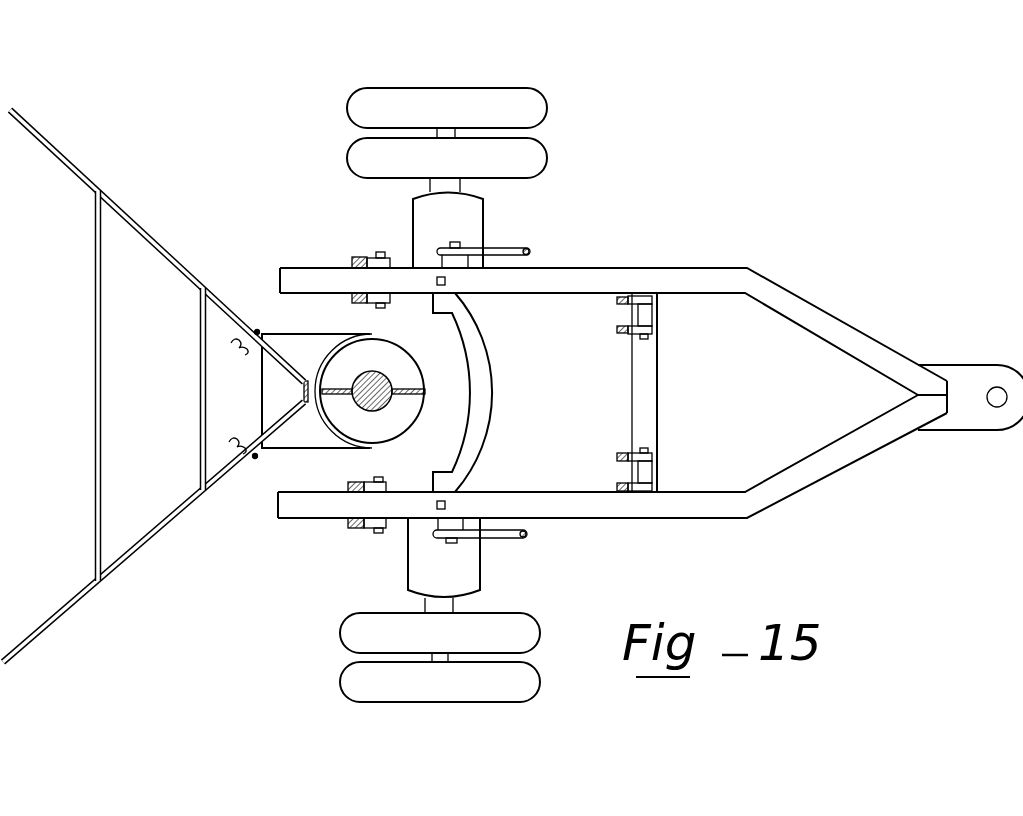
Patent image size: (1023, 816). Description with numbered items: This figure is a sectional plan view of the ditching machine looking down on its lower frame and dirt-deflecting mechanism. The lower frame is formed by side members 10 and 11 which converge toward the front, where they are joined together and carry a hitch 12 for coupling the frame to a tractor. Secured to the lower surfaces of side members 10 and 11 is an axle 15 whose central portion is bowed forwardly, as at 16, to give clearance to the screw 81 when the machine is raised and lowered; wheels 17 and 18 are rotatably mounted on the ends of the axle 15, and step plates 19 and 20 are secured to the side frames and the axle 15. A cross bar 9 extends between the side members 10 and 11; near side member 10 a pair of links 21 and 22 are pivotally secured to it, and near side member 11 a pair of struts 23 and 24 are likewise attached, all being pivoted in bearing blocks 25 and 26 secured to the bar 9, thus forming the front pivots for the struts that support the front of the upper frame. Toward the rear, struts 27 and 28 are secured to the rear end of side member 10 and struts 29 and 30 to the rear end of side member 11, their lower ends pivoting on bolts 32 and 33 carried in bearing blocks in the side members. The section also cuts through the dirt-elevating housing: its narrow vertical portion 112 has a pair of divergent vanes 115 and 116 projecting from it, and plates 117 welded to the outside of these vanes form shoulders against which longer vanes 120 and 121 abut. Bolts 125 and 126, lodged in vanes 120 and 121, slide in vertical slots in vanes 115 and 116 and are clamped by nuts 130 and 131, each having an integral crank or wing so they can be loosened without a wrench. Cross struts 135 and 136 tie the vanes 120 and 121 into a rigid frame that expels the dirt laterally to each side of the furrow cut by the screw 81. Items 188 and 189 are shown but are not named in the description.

The cross bar 9 is at (644, 392).
The side member 10 is at (613, 331).
The side member 11 is at (612, 456).
The hitch 12 is at (970, 397).
The axle 15 is at (456, 492).
The forwardly bowed portion 16 is at (490, 392).
The wheel 17 is at (443, 395).
The wheel 18 is at (443, 395).
The step plate 19 is at (444, 565).
The step plate 20 is at (448, 223).
The link 21 is at (617, 301).
The link 22 is at (617, 330).
The strut 23 is at (622, 455).
The strut 24 is at (617, 488).
The bearing block 25 is at (652, 309).
The bearing block 26 is at (652, 469).
The strut 27 is at (351, 262).
The strut 28 is at (352, 297).
The strut 29 is at (342, 486).
The strut 30 is at (348, 523).
The bolt 32 is at (382, 252).
The bolt 33 is at (379, 533).
The screw 81 is at (366, 380).
The vertical narrowed portion 112 is at (303, 392).
The vane 115 is at (280, 421).
The vane 116 is at (272, 359).
The plate 117 is at (281, 357).
The vane 120 is at (150, 543).
The vane 121 is at (160, 232).
The bolt 125 is at (255, 456).
The bolt 126 is at (257, 332).
The nut 130 is at (233, 350).
The nut 131 is at (242, 450).
The cross strut 135 is at (200, 376).
The cross strut 136 is at (98, 405).
The lower rod 188 is at (461, 541).
The upper rod 189 is at (453, 248).